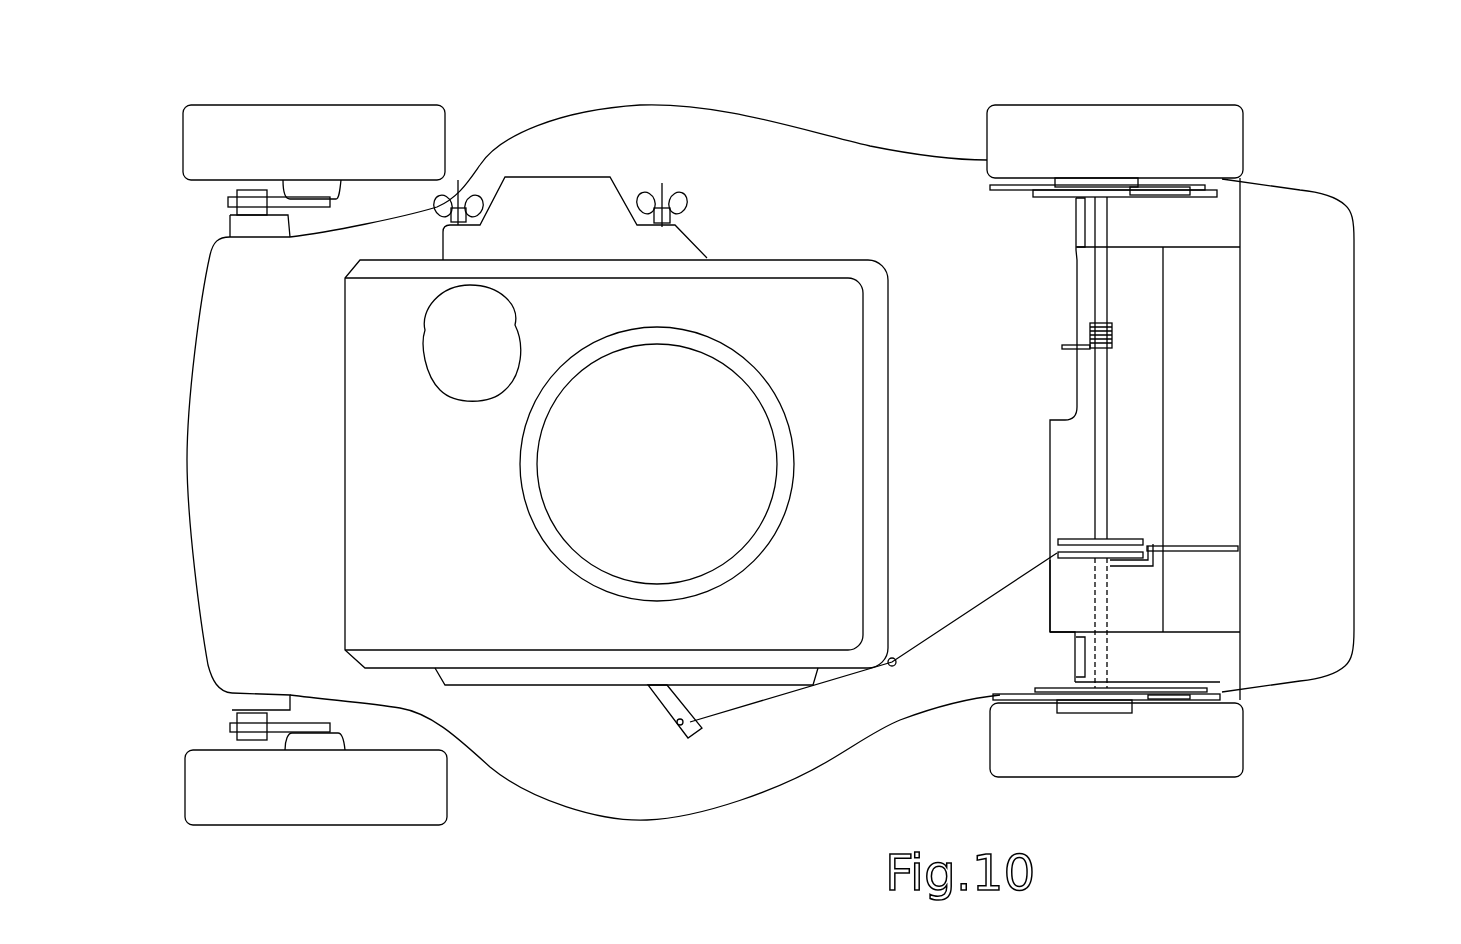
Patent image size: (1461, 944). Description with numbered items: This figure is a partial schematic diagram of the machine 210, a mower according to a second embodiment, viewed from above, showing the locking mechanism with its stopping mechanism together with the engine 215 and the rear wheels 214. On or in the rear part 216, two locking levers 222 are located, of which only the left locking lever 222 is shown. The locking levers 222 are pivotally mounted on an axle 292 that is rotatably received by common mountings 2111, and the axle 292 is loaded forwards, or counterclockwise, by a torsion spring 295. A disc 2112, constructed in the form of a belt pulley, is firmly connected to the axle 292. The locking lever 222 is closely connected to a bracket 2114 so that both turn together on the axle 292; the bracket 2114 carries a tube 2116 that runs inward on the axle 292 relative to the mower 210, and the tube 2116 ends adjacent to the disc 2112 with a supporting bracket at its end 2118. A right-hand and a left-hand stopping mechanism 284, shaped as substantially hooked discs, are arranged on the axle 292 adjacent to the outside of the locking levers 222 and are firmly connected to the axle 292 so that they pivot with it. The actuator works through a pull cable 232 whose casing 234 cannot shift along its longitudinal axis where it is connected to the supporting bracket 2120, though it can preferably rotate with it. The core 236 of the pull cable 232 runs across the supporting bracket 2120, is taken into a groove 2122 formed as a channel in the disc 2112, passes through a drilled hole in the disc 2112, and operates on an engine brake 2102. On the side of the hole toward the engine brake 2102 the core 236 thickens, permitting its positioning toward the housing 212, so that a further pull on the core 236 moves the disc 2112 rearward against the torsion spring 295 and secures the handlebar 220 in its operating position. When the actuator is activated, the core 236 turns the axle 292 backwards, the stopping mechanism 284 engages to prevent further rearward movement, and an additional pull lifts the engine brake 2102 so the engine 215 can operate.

The machine 210 is at (828, 128).
The housing 212 is at (897, 182).
The rear wheels 214 is at (1060, 160).
The engine 215 is at (633, 478).
The rear part 216 is at (1276, 305).
The handlebar 220 is at (1132, 227).
The locking lever 222 is at (1000, 700).
The pull cable 232 is at (1187, 520).
The casing 234 is at (1225, 545).
The core 236 is at (1005, 596).
The stopping mechanism 284 is at (1130, 703).
The axle 292 is at (1098, 470).
The torsion spring 295 is at (1090, 327).
The engine brake 2102 is at (662, 720).
The common mountings 2111 is at (1137, 663).
The disc 2112 is at (1077, 540).
The bracket 2114 is at (1123, 632).
The tube 2116 is at (1092, 602).
The end 2118 is at (1144, 602).
The supporting bracket 2120 is at (1138, 562).
The groove 2122 is at (1045, 548).